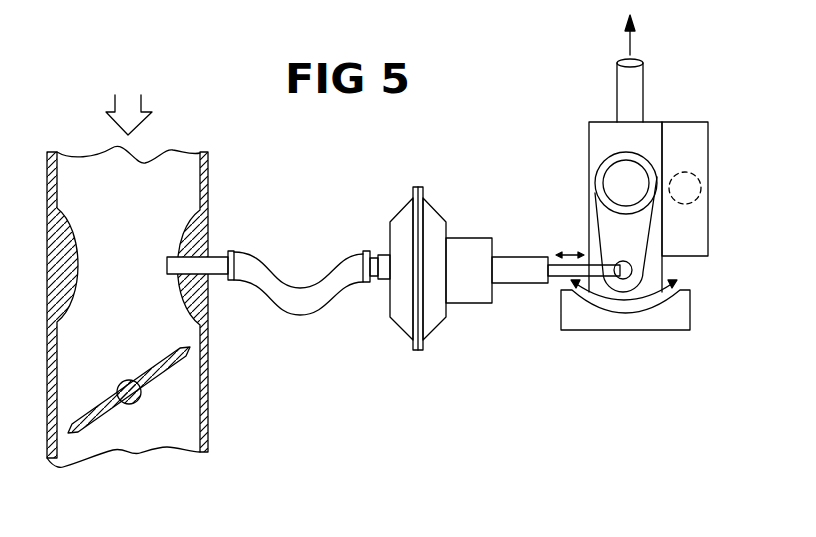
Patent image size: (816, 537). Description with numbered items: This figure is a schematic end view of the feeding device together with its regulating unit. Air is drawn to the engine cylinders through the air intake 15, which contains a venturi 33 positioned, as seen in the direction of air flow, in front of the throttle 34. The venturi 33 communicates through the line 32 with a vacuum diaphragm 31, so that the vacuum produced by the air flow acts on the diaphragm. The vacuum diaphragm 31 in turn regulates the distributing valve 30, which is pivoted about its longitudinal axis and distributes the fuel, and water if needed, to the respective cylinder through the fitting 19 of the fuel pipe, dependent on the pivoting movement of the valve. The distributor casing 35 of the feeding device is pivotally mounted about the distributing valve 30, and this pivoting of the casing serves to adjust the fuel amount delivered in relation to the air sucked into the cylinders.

The air intake 15 is at (205, 165).
The fitting 19 is at (628, 90).
The distributing valve 30 is at (617, 188).
The vacuum diaphragm 31 is at (402, 235).
The line 32 is at (305, 305).
The venturi 33 is at (192, 288).
The throttle 34 is at (163, 372).
The distributor casing 35 is at (607, 140).